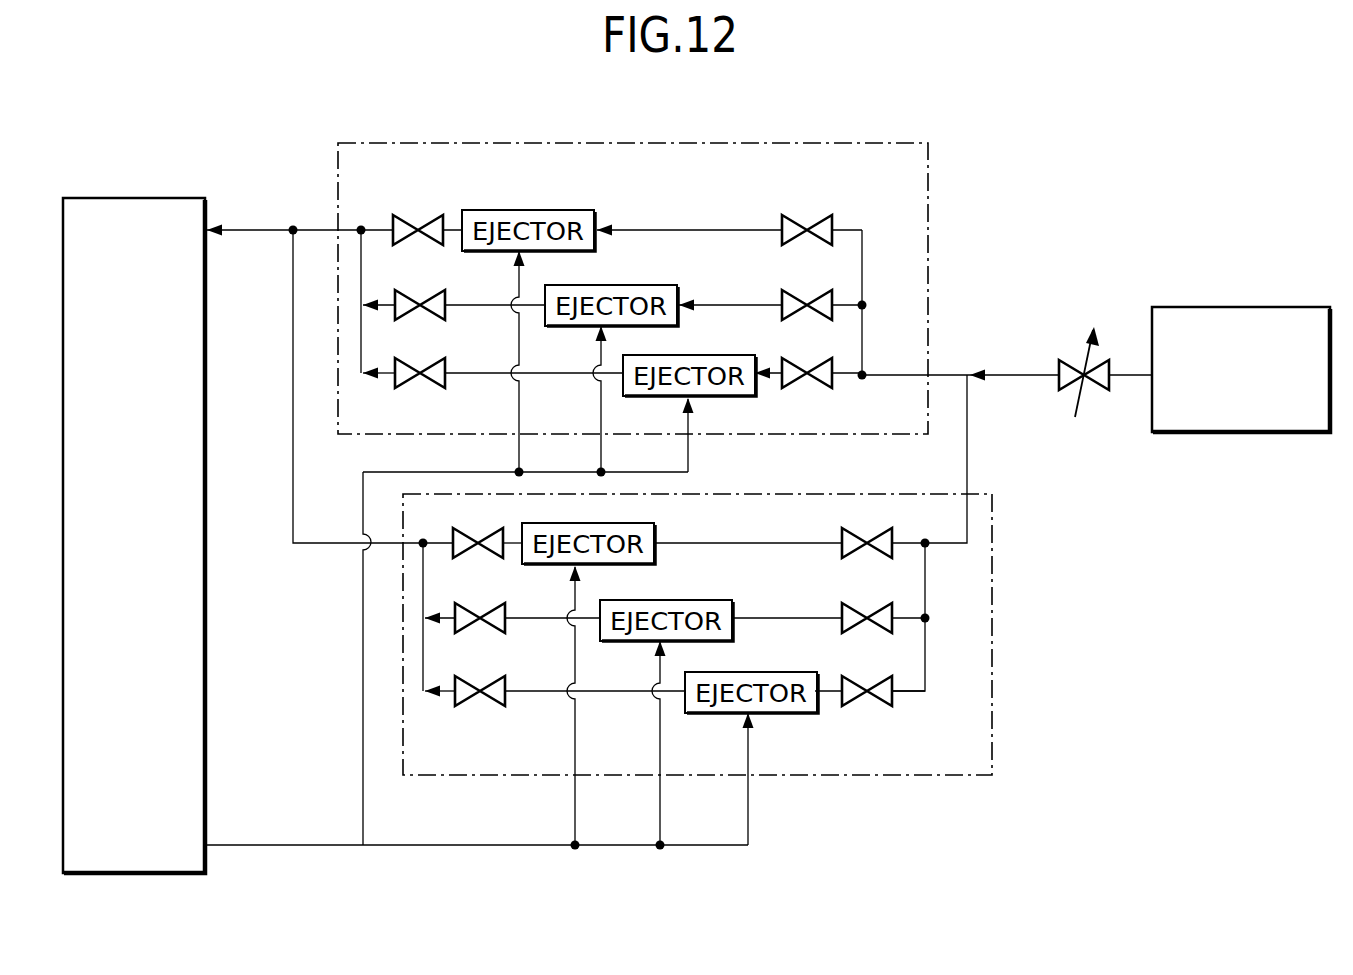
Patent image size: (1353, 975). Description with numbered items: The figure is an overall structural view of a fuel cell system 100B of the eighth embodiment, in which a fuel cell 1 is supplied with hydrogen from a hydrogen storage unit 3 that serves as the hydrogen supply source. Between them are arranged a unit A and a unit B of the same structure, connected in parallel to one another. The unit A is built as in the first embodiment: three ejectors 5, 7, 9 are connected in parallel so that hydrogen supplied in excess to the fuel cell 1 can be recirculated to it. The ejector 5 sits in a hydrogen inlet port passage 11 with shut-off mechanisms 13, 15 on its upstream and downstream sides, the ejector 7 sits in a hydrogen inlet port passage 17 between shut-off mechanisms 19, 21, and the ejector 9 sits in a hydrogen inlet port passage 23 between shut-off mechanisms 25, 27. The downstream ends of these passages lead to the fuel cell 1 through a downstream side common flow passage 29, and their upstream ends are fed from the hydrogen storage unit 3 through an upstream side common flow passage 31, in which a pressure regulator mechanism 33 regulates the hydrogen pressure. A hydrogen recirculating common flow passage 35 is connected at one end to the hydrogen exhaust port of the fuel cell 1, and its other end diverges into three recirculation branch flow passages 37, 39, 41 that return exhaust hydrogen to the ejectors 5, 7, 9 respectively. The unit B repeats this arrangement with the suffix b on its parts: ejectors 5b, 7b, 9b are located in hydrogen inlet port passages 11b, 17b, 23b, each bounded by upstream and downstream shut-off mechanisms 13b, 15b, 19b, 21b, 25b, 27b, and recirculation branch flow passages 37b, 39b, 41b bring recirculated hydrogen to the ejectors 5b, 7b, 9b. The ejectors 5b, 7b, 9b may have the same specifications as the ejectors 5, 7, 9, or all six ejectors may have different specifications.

The fuel cell system 100B is at (1049, 146).
The fuel cell 1 is at (123, 198).
The hydrogen storage unit 3 is at (1200, 306).
The unit A is at (928, 282).
The unit B is at (992, 615).
The ejector 5 is at (538, 210).
The ejector 7 is at (641, 286).
The ejector 9 is at (720, 355).
The hydrogen inlet port passage 11 is at (750, 229).
The shut-off mechanism 13 is at (800, 226).
The shut-off mechanism 15 is at (415, 226).
The hydrogen inlet port passage 17 is at (752, 305).
The shut-off mechanism 19 is at (800, 301).
The shut-off mechanism 21 is at (415, 300).
The hydrogen inlet port passage 23 is at (545, 372).
The shut-off mechanism 25 is at (800, 370).
The shut-off mechanism 27 is at (415, 368).
The downstream side common flow passage 29 is at (249, 228).
The upstream side common flow passage 31 is at (1128, 377).
The pressure regulator mechanism 33 is at (1098, 338).
The hydrogen recirculating common flow passage 35 is at (292, 845).
The recirculation branch flow passage 37 is at (519, 410).
The recirculation branch flow passage 39 is at (601, 410).
The recirculation branch flow passage 41 is at (688, 455).
The ejector 5b is at (655, 532).
The ejector 7b is at (732, 607).
The ejector 9b is at (768, 672).
The hydrogen inlet port passage 11b is at (757, 543).
The shut-off mechanism 13b is at (856, 557).
The shut-off mechanism 15b is at (466, 555).
The hydrogen inlet port passage 17b is at (812, 618).
The shut-off mechanism 19b is at (856, 632).
The shut-off mechanism 21b is at (466, 630).
The hydrogen inlet port passage 23b is at (612, 691).
The shut-off mechanism 25b is at (856, 705).
The shut-off mechanism 27b is at (466, 703).
The recirculation branch flow passage 37b is at (575, 795).
The recirculation branch flow passage 39b is at (660, 795).
The recirculation branch flow passage 41b is at (748, 805).